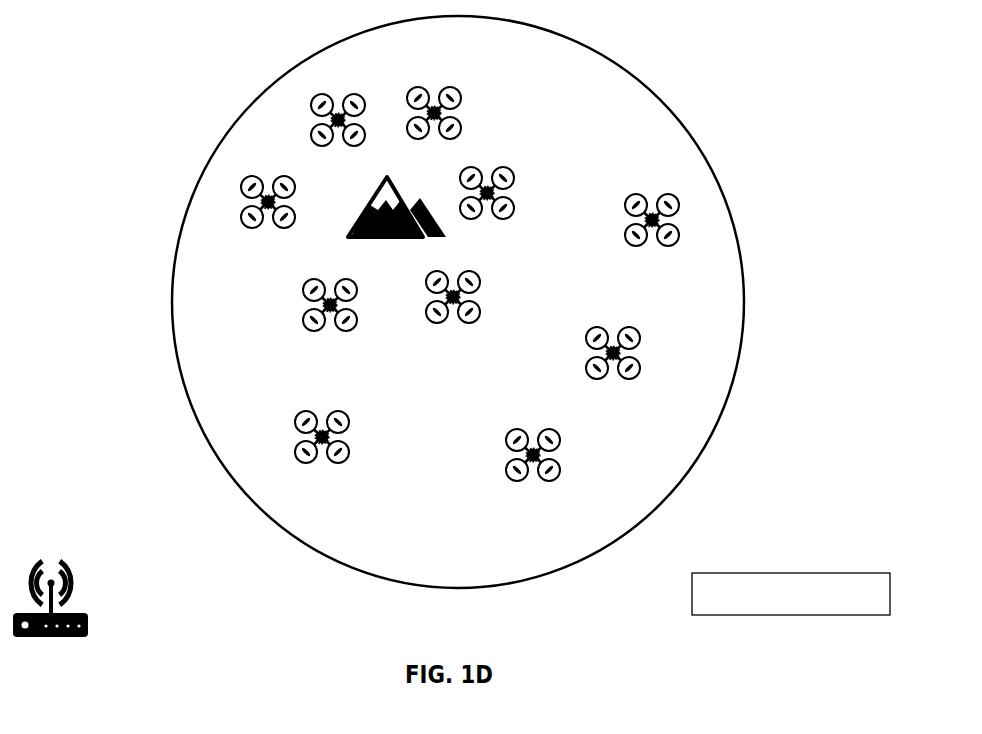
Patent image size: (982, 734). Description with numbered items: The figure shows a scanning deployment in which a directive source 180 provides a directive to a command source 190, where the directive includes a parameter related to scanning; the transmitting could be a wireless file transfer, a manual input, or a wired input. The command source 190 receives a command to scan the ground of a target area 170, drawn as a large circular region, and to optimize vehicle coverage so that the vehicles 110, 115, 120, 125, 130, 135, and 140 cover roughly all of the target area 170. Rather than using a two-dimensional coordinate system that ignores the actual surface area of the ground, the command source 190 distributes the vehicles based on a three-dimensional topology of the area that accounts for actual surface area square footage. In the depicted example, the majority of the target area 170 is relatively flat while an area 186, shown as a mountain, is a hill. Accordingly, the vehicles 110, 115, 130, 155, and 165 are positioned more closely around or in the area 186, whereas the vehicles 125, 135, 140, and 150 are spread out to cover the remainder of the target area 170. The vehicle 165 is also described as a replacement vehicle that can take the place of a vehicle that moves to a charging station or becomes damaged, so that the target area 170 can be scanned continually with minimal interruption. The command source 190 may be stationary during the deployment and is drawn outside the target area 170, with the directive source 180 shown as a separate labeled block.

The vehicle 110 is at (462, 127).
The vehicle 115 is at (312, 133).
The vehicle 120 is at (513, 178).
The vehicle 125 is at (680, 235).
The vehicle 130 is at (480, 282).
The vehicle 135 is at (640, 370).
The vehicle 140 is at (518, 482).
The vehicle 150 is at (296, 422).
The vehicle 155 is at (305, 320).
The replacement vehicle 165 is at (242, 187).
The target area 170 is at (172, 308).
The area 186 is at (348, 236).
The directive source 180 is at (790, 615).
The command source 190 is at (88, 630).